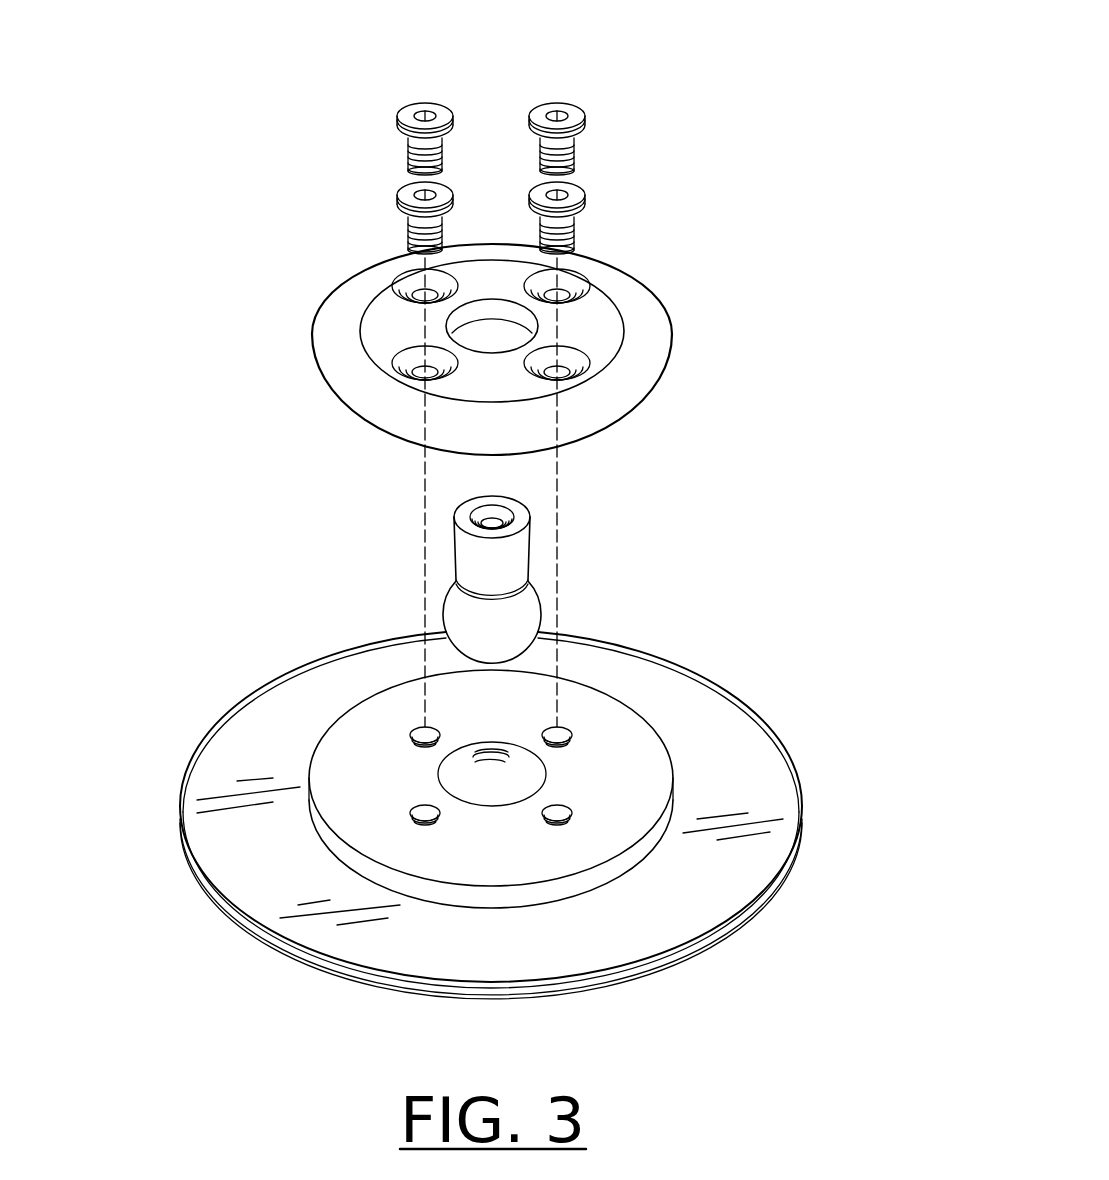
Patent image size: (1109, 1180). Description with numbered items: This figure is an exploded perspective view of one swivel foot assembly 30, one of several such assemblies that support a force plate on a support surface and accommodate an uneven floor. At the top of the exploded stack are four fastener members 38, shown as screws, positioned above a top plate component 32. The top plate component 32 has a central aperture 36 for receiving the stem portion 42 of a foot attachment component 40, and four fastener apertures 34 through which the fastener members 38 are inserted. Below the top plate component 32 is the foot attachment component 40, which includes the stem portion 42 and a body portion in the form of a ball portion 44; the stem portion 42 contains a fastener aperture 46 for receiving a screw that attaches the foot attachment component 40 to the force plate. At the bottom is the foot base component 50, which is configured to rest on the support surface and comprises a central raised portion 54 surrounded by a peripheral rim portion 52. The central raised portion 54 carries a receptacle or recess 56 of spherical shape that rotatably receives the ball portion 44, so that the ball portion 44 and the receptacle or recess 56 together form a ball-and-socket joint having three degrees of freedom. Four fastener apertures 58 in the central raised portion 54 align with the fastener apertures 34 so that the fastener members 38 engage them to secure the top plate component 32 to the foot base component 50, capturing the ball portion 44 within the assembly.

The swivel foot assembly 30 is at (238, 365).
The top plate component 32 is at (677, 345).
The fastener aperture 34 is at (390, 290).
The aperture 36 is at (492, 322).
The fastener member 38 is at (398, 192).
The foot attachment component 40 is at (545, 588).
The stem portion 42 is at (453, 537).
The ball portion 44 is at (453, 618).
The fastener aperture 46 is at (494, 516).
The foot base component 50 is at (800, 800).
The peripheral rim portion 52 is at (673, 902).
The central raised portion 54 is at (623, 773).
The receptacle or recess 56 is at (492, 775).
The fastener aperture 58 is at (577, 733).